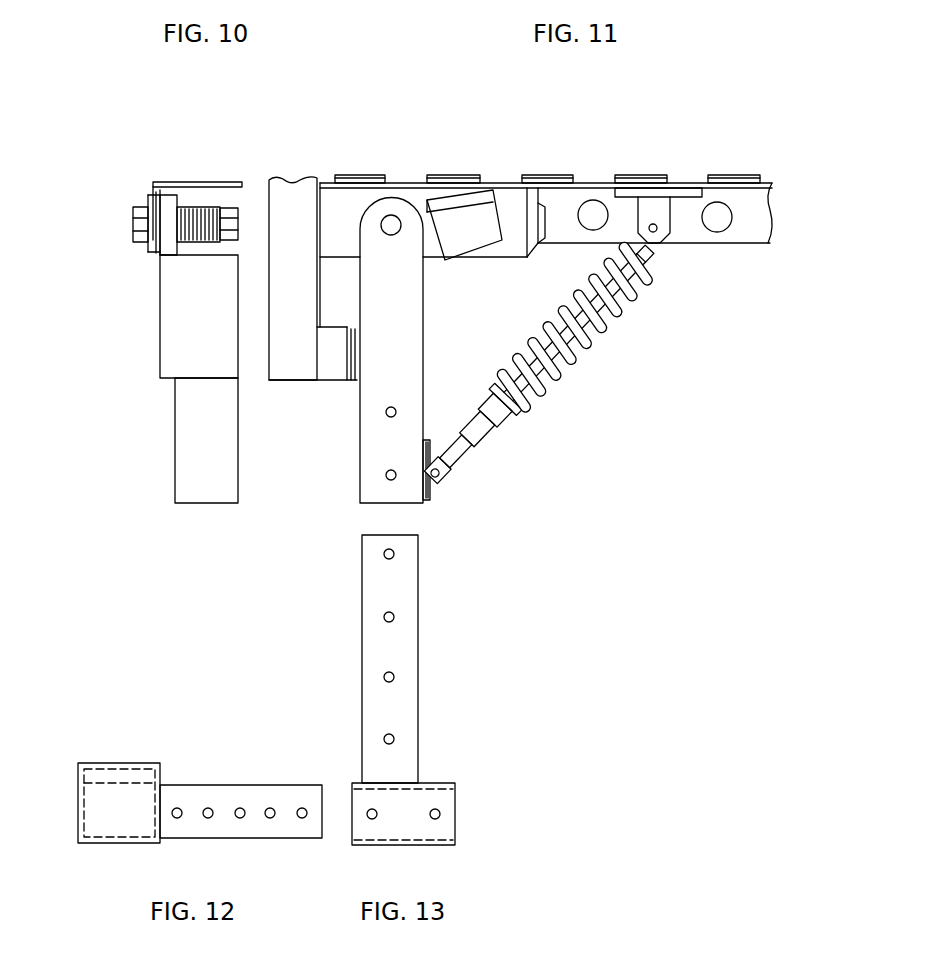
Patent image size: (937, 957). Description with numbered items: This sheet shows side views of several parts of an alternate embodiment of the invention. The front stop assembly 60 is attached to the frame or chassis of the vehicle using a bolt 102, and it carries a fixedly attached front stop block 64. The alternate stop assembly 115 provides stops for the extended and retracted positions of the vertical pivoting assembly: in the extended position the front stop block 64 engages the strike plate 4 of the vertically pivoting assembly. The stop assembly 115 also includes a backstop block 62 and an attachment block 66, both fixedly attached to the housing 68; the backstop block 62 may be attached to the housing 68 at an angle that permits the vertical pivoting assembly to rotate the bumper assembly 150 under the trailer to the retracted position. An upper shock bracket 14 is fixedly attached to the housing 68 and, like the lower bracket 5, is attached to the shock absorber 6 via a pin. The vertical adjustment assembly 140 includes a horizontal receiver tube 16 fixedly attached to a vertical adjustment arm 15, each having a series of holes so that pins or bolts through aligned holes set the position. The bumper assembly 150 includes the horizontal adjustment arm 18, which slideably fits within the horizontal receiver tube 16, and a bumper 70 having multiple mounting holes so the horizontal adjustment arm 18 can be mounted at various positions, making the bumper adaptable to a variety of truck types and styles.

In FIG. 10, the bolt 102 is at (193, 207).
In FIG. 11, the front stop assembly 60 is at (300, 203).
In FIG. 11, the backstop block 62 is at (465, 213).
In FIG. 11, the front stop block 64 is at (350, 382).
In FIG. 11, the attachment block 66 is at (445, 198).
In FIG. 11, the housing 68 is at (763, 203).
In FIG. 11, the upper shock bracket 14 is at (662, 242).
In FIG. 11, the strike plate 4 is at (357, 295).
In FIG. 11, the lower bracket 5 is at (449, 487).
In FIG. 11, the shock absorber 6 is at (562, 390).
In FIG. 11, the stop assembly 115 is at (521, 380).
In FIG. 13, the vertical adjustment arm 15 is at (415, 687).
In FIG. 13, the horizontal receiver tube 16 is at (445, 832).
In FIG. 13, the vertical adjustment assembly 140 is at (447, 690).
In FIG. 12, the bumper 70 is at (78, 835).
In FIG. 12, the horizontal adjustment arm 18 is at (268, 828).
In FIG. 12, the bumper assembly 150 is at (176, 814).